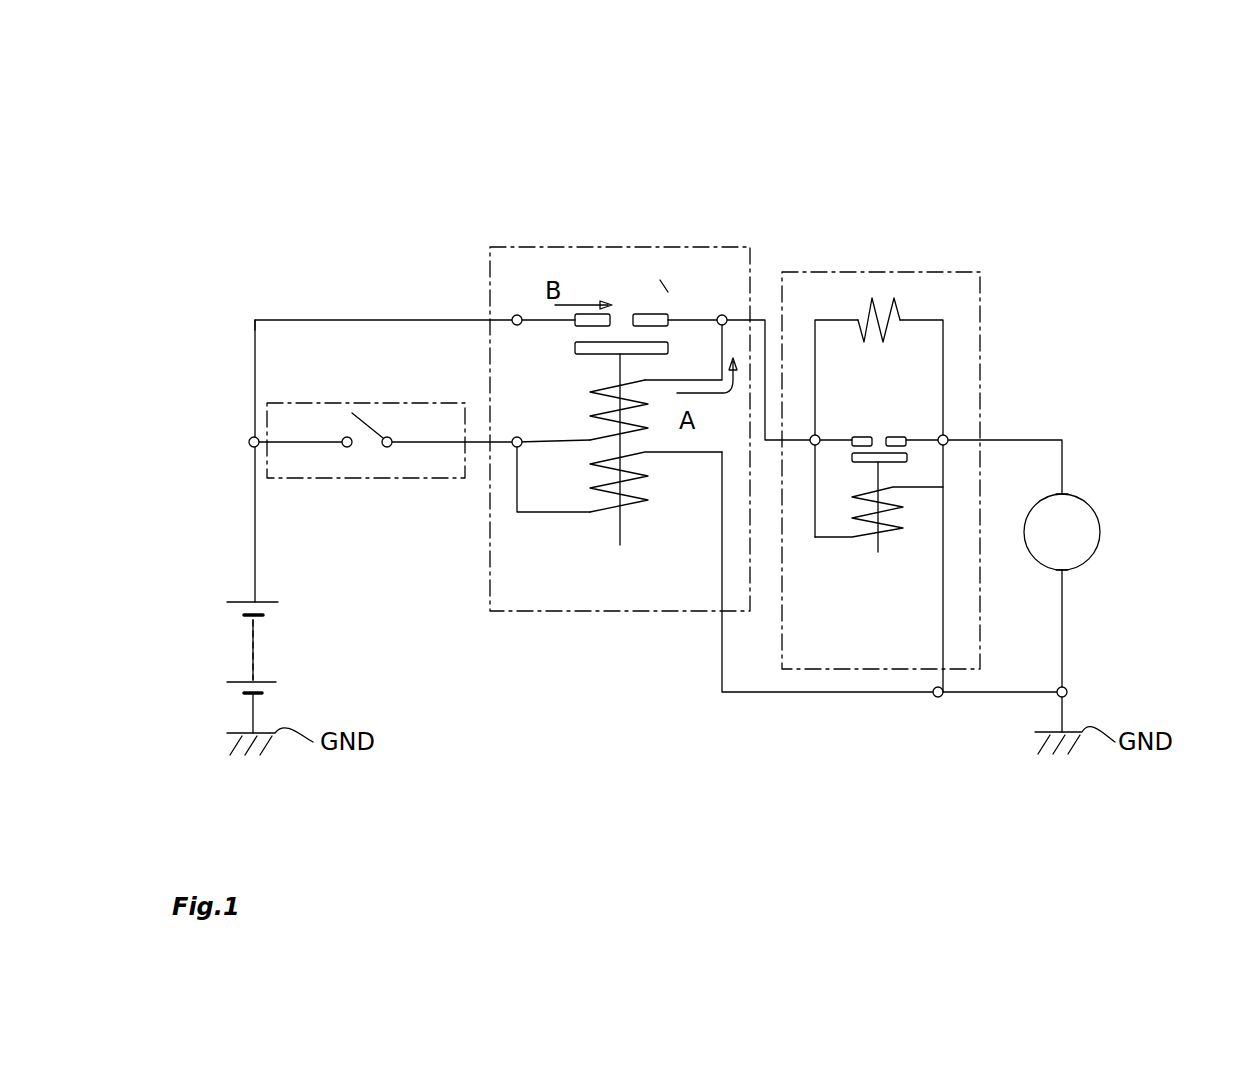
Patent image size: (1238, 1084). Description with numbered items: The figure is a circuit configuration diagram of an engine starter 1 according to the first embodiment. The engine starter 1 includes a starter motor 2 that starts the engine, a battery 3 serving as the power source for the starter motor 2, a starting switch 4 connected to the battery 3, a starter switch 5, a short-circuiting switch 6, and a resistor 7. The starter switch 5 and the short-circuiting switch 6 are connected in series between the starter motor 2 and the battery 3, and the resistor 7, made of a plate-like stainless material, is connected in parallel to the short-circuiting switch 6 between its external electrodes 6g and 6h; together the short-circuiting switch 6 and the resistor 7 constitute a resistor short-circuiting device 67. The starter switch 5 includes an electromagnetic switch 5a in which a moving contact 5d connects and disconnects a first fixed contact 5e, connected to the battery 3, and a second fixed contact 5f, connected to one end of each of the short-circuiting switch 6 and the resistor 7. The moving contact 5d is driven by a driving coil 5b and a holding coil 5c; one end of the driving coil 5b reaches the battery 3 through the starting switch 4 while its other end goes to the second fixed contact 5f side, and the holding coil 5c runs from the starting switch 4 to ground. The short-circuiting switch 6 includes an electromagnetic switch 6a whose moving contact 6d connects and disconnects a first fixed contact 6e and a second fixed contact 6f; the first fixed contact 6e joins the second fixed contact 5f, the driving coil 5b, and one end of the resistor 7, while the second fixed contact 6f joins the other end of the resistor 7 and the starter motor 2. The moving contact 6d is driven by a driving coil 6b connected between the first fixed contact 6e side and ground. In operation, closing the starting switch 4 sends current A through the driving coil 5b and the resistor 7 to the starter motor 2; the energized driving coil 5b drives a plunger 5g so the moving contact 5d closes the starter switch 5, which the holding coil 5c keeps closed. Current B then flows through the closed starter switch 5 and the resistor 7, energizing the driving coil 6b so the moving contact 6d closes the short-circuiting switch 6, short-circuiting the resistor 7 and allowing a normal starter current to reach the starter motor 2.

The engine starter 1 is at (205, 347).
The starter motor 2 is at (1080, 495).
The battery 3 is at (225, 673).
The starting switch 4 is at (347, 450).
The starter switch 5 is at (618, 246).
The electromagnetic switch 5a is at (670, 280).
The driving coil 5b is at (648, 440).
The holding coil 5c is at (612, 520).
The moving contact 5d is at (575, 348).
The first fixed contact 5e is at (588, 314).
The second fixed contact 5f is at (651, 314).
The plunger 5g is at (623, 542).
The short-circuiting switch 6 is at (874, 542).
The electromagnetic switch 6a is at (849, 604).
The driving coil 6b is at (885, 533).
The moving contact 6d is at (907, 456).
The first fixed contact 6e is at (862, 437).
The second fixed contact 6f is at (903, 437).
The external electrode 6g is at (815, 447).
The external electrode 6h is at (943, 447).
The resistor 7 is at (872, 300).
The resistor short-circuiting device 67 is at (957, 273).